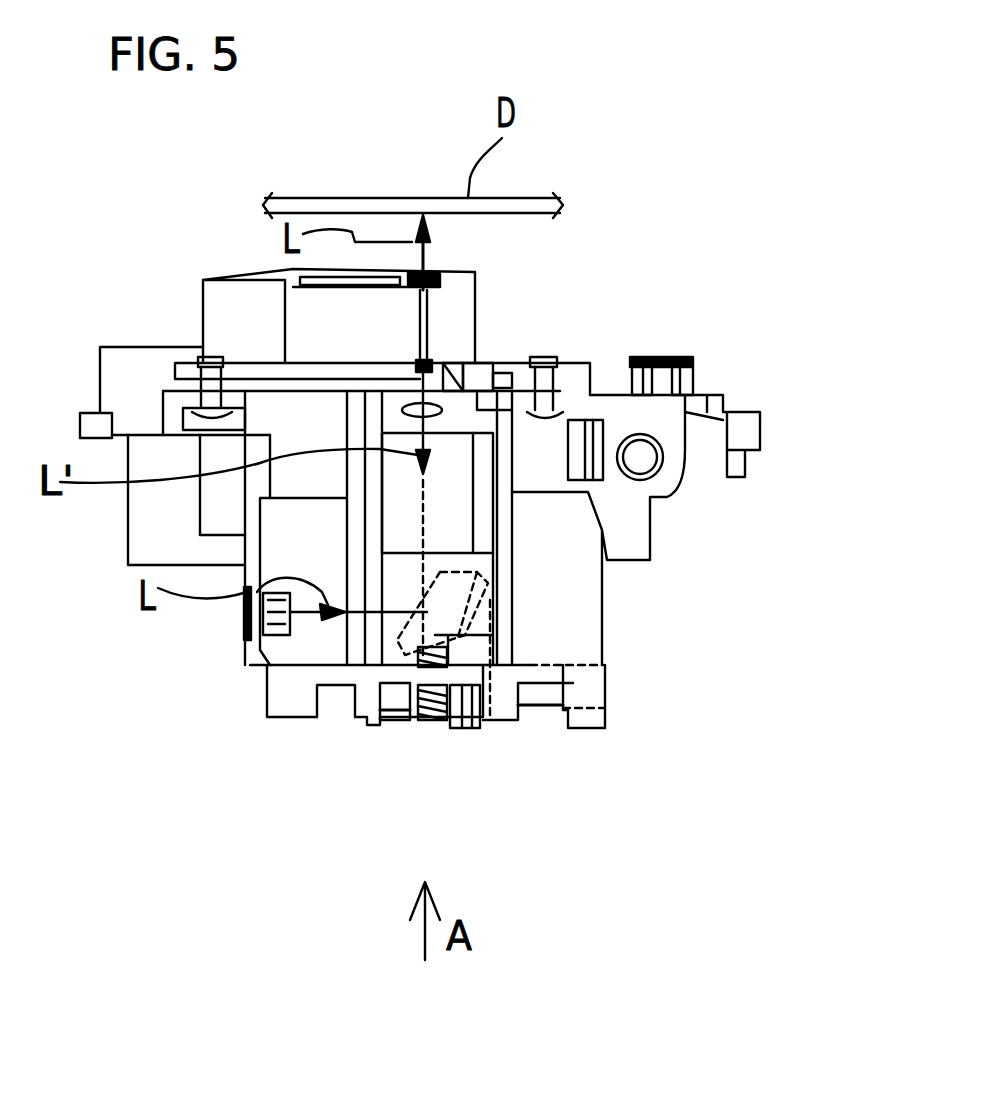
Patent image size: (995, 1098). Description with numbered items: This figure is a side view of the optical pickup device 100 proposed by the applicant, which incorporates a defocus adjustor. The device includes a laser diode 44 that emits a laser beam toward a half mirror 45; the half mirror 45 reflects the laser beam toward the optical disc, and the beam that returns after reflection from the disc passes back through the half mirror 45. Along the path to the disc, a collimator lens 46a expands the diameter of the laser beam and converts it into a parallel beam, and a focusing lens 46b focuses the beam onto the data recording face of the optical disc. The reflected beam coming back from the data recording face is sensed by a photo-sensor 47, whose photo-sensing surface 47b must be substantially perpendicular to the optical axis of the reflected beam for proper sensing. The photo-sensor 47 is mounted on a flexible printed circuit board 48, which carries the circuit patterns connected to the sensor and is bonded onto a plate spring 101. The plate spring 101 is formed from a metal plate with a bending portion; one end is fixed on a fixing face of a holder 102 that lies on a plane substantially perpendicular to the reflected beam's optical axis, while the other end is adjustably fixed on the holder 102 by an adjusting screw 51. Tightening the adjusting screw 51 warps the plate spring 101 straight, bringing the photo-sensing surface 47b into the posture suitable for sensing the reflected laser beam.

The optical pickup device 100 is at (708, 123).
The focusing lens 46b is at (442, 270).
The collimator lens 46a is at (432, 363).
The laser diode 44 is at (250, 645).
The holder 102 is at (285, 698).
The flexible printed circuit board 48 is at (335, 716).
The photo-sensor 47 is at (398, 723).
The photo-sensing surface 47b is at (406, 722).
The adjusting screw 51 is at (408, 703).
The half mirror 45 is at (503, 723).
The plate spring 101 is at (533, 707).